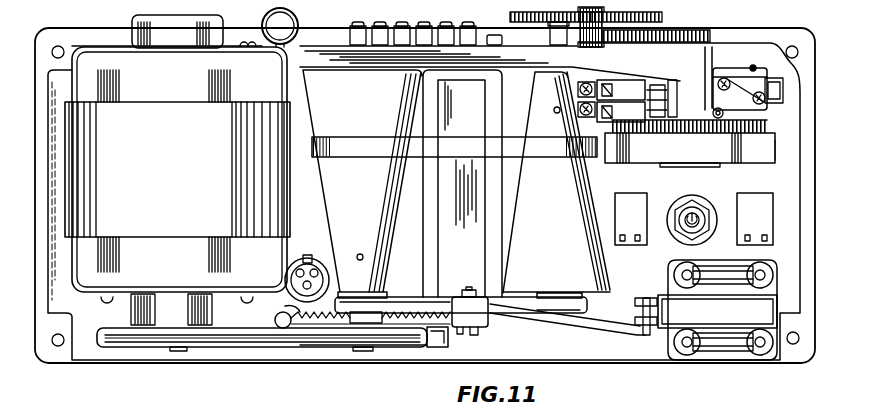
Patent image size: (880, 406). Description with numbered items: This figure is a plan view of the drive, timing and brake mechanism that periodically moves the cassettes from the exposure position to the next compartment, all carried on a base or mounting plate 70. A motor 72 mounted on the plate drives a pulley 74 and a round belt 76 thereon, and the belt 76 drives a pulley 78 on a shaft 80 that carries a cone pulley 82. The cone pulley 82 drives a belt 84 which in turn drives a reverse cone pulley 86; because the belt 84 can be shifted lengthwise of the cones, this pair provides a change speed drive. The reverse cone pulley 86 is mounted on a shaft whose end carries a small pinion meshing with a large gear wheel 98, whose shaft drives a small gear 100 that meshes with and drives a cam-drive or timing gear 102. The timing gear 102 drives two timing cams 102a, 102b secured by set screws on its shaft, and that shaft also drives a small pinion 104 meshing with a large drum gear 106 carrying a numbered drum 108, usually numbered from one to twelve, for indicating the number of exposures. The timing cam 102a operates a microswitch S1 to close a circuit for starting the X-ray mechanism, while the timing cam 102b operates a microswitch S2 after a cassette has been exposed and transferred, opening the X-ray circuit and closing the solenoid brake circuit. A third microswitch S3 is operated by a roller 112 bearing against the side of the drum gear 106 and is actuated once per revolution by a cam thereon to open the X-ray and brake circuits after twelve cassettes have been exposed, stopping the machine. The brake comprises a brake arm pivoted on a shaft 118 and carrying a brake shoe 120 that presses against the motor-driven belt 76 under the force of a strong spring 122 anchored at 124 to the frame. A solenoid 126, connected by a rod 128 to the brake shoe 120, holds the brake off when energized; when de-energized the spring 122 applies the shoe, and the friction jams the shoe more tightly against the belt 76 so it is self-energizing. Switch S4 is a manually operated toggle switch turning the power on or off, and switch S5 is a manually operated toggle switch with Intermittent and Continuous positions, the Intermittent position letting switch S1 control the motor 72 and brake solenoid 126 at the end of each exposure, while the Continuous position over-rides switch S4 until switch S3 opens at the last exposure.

The base or mounting plate 70 is at (125, 352).
The motor 72 is at (170, 169).
The pulley 74 is at (218, 350).
The round belt 76 is at (277, 336).
The pulley 78 is at (407, 352).
The shaft 80 is at (368, 350).
The cone pulley 82 is at (338, 223).
The belt 84 is at (375, 147).
The reverse cone pulley 86 is at (590, 180).
The large gear wheel 98 is at (635, 1).
The small gear 100 is at (595, 40).
The cam-drive or timing gear 102 is at (690, 33).
The timing cam 102a is at (645, 79).
The timing cam 102b is at (677, 68).
The small pinion 104 is at (628, 133).
The drum gear 106 is at (768, 124).
The numbered drum 108 is at (767, 155).
The roller 112 is at (712, 115).
The shaft 118 is at (468, 287).
The brake shoe 120 is at (444, 345).
The spring 122 is at (288, 305).
The anchor 124 is at (275, 320).
The solenoid 126 is at (732, 321).
The rod 128 is at (596, 330).
The microswitch S1 is at (611, 90).
The microswitch S2 is at (611, 112).
The microswitch S3 is at (733, 88).
The toggle switch S4 is at (640, 205).
The toggle switch S5 is at (743, 193).